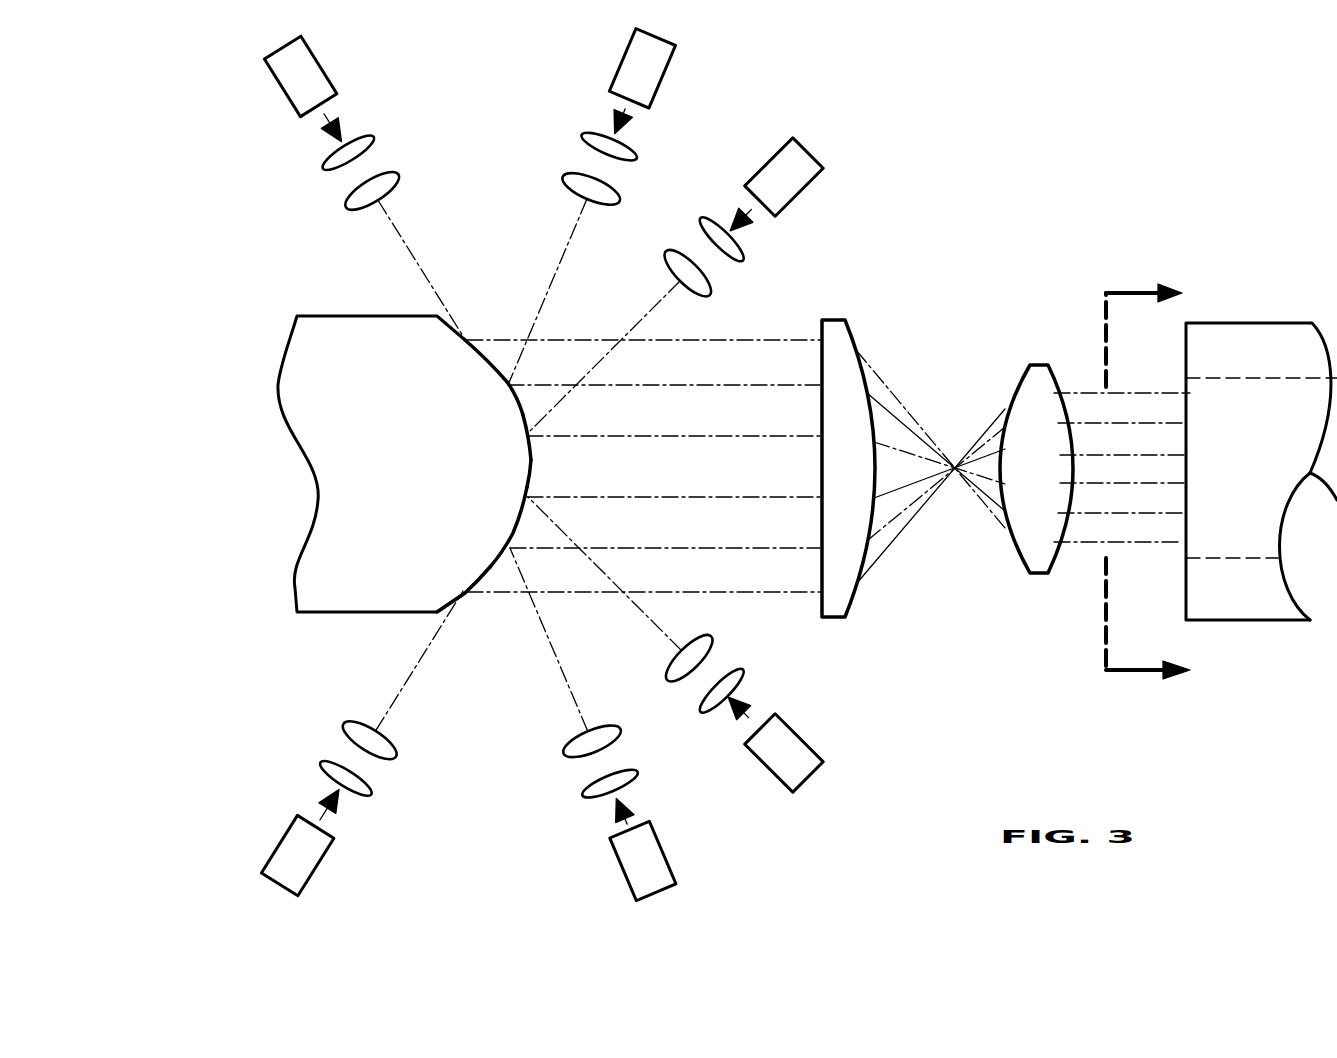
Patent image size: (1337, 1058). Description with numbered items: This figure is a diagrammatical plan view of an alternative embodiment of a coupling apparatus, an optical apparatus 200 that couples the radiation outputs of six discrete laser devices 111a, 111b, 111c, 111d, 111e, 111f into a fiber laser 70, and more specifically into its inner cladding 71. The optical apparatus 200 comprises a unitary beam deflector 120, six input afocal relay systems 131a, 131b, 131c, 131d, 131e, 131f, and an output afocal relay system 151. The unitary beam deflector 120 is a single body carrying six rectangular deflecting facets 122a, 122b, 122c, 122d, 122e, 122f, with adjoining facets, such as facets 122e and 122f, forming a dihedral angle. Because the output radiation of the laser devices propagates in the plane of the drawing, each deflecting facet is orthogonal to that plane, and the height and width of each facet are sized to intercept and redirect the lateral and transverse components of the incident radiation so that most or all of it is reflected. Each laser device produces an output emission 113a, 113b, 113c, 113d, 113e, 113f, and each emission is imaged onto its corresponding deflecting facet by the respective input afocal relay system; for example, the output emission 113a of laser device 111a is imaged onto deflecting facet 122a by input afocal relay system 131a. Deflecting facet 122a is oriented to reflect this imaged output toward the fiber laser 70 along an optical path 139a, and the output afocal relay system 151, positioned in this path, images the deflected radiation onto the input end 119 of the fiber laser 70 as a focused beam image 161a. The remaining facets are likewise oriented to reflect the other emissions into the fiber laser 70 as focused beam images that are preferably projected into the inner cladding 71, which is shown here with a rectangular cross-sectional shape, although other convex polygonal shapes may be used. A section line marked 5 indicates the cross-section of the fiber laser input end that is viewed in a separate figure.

The discrete laser device 111a is at (270, 67).
The discrete laser device 111b is at (672, 64).
The discrete laser device 111c is at (824, 166).
The discrete laser device 111d is at (822, 752).
The discrete laser device 111e is at (606, 841).
The discrete laser device 111f is at (337, 843).
The input afocal relay system 131a is at (395, 162).
The input afocal relay system 131b is at (572, 161).
The input afocal relay system 131c is at (685, 249).
The input afocal relay system 131d is at (688, 681).
The input afocal relay system 131e is at (566, 768).
The input afocal relay system 131f is at (331, 751).
The output emission 113a is at (397, 212).
The output emission 113b is at (540, 302).
The output emission 113c is at (650, 318).
The output emission 113d is at (642, 618).
The output emission 113e is at (575, 716).
The output emission 113f is at (428, 646).
The unitary beam deflector 120 is at (361, 316).
The deflecting facet 122a is at (473, 353).
The deflecting facet 122b is at (508, 398).
The deflecting facet 122c is at (517, 425).
The deflecting facet 122d is at (528, 478).
The deflecting facet 122e is at (512, 535).
The deflecting facet 122f is at (477, 578).
The optical path 139a is at (700, 338).
The output afocal relay system 151 is at (1055, 313).
The optical apparatus 200 is at (1128, 189).
The input end 119 is at (1184, 350).
The focused beam image 161a is at (1186, 393).
The inner cladding 71 is at (1218, 560).
The fiber laser 70 is at (1188, 622).
The section line 5- 5 is at (1158, 484).